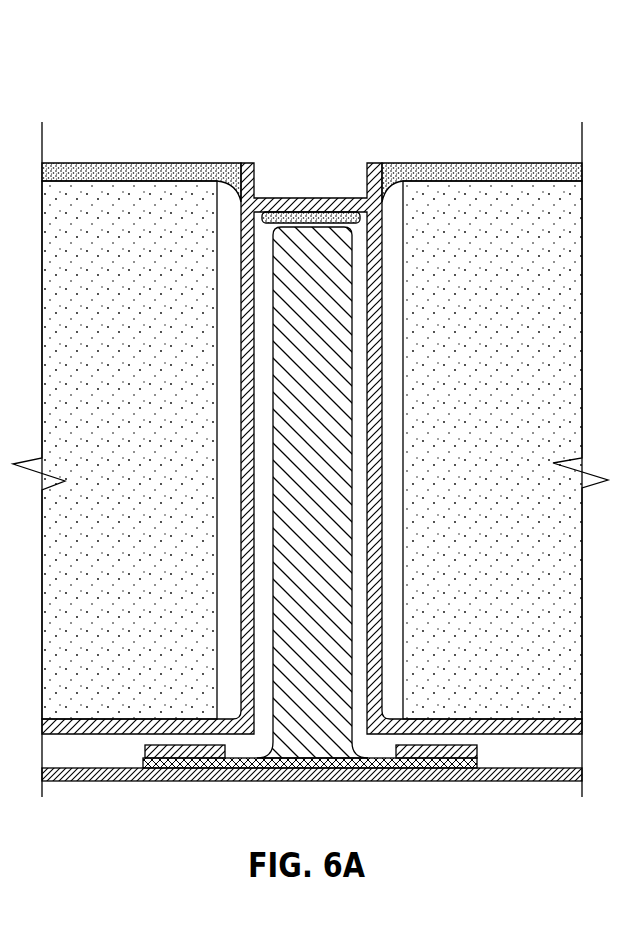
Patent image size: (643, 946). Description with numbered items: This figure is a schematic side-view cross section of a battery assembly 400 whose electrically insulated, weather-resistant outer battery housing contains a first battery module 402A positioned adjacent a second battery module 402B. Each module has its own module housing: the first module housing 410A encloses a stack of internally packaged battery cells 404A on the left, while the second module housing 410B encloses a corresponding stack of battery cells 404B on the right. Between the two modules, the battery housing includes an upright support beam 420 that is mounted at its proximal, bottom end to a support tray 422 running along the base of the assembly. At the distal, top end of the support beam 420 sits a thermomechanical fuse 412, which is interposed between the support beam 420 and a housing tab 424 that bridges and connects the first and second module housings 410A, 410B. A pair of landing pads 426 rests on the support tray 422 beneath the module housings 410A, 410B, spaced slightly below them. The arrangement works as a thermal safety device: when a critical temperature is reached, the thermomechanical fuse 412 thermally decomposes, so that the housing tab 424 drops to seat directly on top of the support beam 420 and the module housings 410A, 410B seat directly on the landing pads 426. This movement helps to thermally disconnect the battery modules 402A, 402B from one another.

The battery assembly 400 is at (213, 80).
The first battery module 402A is at (136, 122).
The second battery module 402B is at (485, 122).
The stack of battery cells 404A is at (190, 193).
The stack of battery cells 404B is at (432, 193).
The first module housing 410A is at (80, 163).
The second module housing 410B is at (540, 165).
The thermomechanical fuse 412 is at (343, 198).
The support beam 420 is at (315, 760).
The support tray 422 is at (375, 781).
The housing tab 424 is at (283, 198).
The landing pads 426 is at (178, 758).